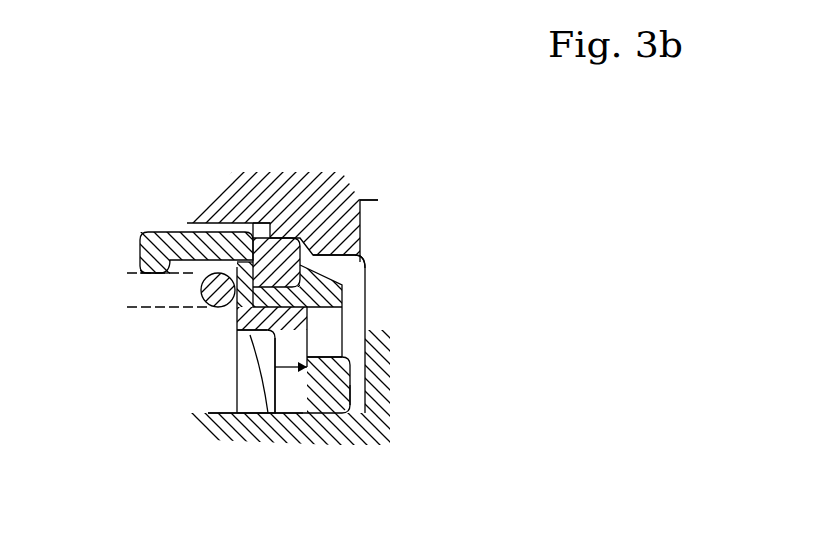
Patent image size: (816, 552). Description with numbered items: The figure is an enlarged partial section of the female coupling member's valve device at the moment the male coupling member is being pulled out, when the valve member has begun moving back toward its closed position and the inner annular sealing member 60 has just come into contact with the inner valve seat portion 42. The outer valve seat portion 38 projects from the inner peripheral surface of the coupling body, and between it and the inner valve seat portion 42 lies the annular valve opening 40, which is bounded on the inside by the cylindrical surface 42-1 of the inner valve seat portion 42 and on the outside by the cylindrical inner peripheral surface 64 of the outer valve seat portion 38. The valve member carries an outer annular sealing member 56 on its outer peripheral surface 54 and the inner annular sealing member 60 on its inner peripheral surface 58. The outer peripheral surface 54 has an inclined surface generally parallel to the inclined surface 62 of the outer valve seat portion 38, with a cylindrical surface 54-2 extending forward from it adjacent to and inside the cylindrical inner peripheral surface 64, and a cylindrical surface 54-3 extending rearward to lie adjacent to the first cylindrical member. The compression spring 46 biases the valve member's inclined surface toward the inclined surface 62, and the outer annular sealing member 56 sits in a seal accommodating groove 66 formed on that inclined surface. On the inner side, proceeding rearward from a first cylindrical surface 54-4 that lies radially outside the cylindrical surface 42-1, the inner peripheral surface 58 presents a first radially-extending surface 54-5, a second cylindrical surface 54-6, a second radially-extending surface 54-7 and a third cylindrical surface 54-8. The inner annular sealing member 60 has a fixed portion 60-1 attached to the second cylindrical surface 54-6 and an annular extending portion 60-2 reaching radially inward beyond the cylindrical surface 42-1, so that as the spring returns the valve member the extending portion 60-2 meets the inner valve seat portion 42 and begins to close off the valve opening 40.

The outer valve seat portion 38 is at (362, 200).
The valve opening 40 is at (358, 312).
The inner valve seat portion 42 is at (325, 425).
The cylindrical surface 42-1 is at (318, 355).
The compression spring 46 is at (203, 296).
The outer peripheral surface 54 is at (302, 215).
The cylindrical surface 54-2 is at (356, 248).
The cylindrical surface 54-3 is at (200, 232).
The first cylindrical surface 54-4 is at (350, 370).
The first radially-extending surface 54-5 is at (342, 390).
The second cylindrical surface 54-6 is at (270, 413).
The second radially-extending surface 54-7 is at (235, 313).
The third cylindrical surface 54-8 is at (140, 250).
The outer annular sealing member 56 is at (253, 232).
The inner peripheral surface 58 is at (225, 413).
The inner annular sealing member 60 is at (345, 416).
The fixed portion 60-1 is at (190, 412).
The extending portion 60-2 is at (280, 413).
The inclined surface 62 is at (278, 242).
The cylindrical inner peripheral surface 64 is at (367, 279).
The seal accommodating groove 66 is at (240, 236).